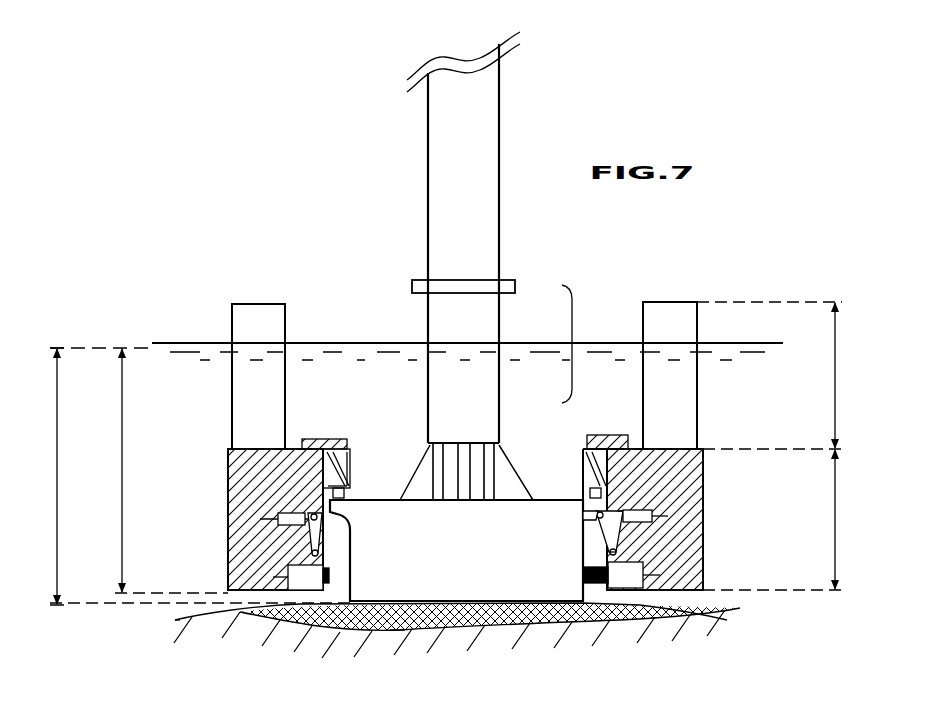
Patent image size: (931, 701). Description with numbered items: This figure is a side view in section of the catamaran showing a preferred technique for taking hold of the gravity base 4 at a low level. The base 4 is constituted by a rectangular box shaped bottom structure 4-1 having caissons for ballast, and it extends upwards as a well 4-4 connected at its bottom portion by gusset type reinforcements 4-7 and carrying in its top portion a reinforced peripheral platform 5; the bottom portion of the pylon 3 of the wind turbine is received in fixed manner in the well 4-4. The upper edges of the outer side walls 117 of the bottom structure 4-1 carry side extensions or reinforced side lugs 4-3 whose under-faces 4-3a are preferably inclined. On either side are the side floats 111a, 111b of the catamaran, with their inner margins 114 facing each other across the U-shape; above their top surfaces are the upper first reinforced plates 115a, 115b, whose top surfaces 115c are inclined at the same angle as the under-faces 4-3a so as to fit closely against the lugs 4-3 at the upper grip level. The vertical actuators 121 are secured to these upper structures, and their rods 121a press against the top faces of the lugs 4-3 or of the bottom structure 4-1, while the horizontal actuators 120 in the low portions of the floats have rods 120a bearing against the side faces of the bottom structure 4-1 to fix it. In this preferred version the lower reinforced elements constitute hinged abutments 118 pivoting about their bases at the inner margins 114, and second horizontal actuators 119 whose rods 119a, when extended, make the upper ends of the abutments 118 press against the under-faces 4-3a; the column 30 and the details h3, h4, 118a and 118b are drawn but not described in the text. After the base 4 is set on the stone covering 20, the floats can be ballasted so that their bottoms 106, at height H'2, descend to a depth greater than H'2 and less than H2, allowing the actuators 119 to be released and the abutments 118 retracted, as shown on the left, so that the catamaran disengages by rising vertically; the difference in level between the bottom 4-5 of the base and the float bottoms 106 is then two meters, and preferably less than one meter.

The pylon 3 is at (486, 167).
The reinforced peripheral platform 5 is at (463, 287).
The gravity base 4 is at (575, 333).
The rectangular box shaped bottom structure 4-1 is at (505, 507).
The reinforced side lug 4-3 is at (590, 513).
The under-face of side lug 4-3a is at (353, 530).
The well 4-4 is at (480, 329).
The bottom of the base 4-5 is at (398, 630).
The gusset type reinforcements 4-7 is at (527, 486).
The stone covering 20 is at (280, 630).
The float column 30 is at (316, 348).
The bottoms of the side floats 106 is at (690, 588).
The side float 111a is at (257, 462).
The side float 111b is at (660, 453).
The inner margin of side float 114 is at (313, 543).
The upper first reinforced structure 115a is at (307, 438).
The upper first reinforced structure 115b is at (618, 437).
The top surface of upper reinforced plate 115c is at (340, 438).
The outer side wall 117 is at (330, 615).
The hinged abutment 118 is at (597, 532).
The pawl lower end 118a is at (608, 555).
The pawl nose 118b is at (583, 513).
The second horizontal actuator 119 is at (627, 530).
The rod of second horizontal actuator 119a is at (610, 503).
The horizontal clamping device 120 is at (633, 590).
The rod of horizontal actuator 120a is at (590, 585).
The vertical clamping device 121 is at (350, 473).
The rod of vertical actuator 121a is at (325, 486).
The height of float bottoms H'2 is at (42, 476).
The depth level H2 is at (158, 471).
The height dimension h3 is at (781, 375).
The height dimension h4 is at (787, 519).